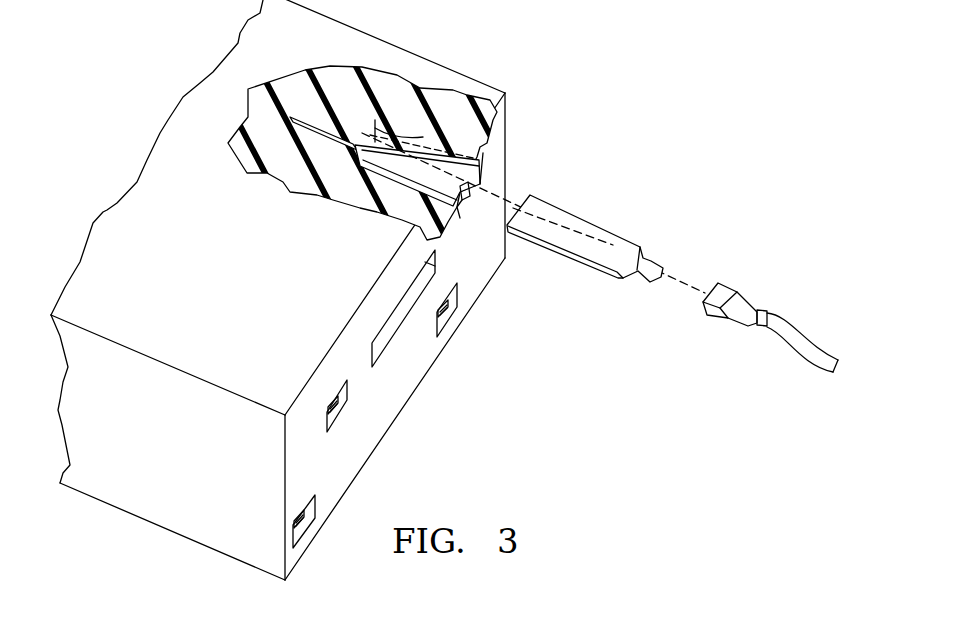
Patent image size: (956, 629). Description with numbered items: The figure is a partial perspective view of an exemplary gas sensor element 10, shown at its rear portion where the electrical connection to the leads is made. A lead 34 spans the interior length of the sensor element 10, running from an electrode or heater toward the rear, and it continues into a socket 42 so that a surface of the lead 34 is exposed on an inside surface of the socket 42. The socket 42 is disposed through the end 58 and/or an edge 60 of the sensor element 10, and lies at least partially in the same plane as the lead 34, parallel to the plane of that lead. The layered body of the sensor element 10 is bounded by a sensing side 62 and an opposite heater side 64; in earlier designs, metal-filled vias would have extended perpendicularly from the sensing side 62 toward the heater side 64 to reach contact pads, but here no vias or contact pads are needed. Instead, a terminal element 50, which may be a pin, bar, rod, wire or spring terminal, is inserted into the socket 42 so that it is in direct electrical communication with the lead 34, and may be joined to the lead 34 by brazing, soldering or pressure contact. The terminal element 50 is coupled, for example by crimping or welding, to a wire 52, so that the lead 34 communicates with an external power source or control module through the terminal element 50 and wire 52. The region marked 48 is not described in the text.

The sensor element 10 is at (132, 133).
The lead 34 is at (427, 173).
The socket 42 is at (478, 182).
The housing opening 48 is at (388, 46).
The terminal element 50 is at (620, 243).
The wire 52 is at (770, 318).
The end 58 is at (405, 380).
The edge 60 is at (150, 487).
The sensing side 62 is at (217, 85).
The heater side 64 is at (208, 550).